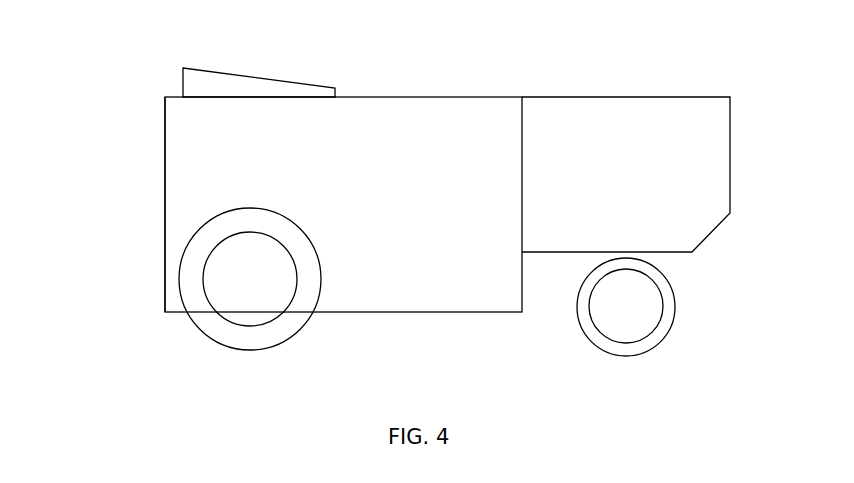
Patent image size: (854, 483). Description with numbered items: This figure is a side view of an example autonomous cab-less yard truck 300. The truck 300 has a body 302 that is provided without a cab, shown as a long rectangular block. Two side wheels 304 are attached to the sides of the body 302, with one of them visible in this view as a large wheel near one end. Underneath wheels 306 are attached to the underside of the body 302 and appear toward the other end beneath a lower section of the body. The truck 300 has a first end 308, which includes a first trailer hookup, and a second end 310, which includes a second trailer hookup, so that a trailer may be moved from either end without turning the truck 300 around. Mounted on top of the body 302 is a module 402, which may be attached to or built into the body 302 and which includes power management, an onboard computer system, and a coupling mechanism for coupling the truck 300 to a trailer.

The autonomous cab-less yard truck 300 is at (176, 22).
The body 302 is at (401, 193).
The side wheels 304 is at (225, 325).
The underneath wheels 306 is at (638, 315).
The first end 308 is at (727, 143).
The second end 310 is at (165, 170).
The module 402 is at (253, 77).